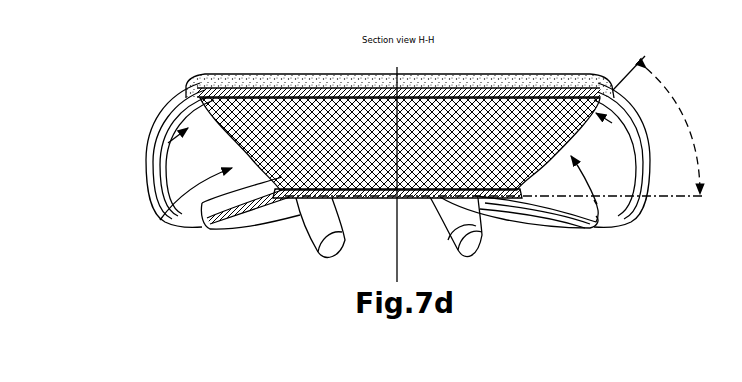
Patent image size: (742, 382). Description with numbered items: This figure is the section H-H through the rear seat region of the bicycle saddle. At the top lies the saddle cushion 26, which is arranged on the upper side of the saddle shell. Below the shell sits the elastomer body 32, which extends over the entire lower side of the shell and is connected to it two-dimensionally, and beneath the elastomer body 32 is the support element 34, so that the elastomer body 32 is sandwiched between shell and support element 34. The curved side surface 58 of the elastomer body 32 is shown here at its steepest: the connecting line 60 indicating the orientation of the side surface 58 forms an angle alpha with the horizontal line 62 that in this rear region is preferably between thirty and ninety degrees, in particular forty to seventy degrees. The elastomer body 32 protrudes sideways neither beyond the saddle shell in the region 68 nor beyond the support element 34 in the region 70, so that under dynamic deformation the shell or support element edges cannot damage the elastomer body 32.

The saddle cushion 26 is at (273, 75).
The elastomer body 32 is at (470, 143).
The support element 34 is at (362, 203).
The side surface 58 is at (160, 220).
The connecting line 60 is at (624, 78).
The horizontal line 62 is at (668, 198).
The region of the saddle shell edge 68 is at (152, 140).
The region of the support element connection 70 is at (266, 212).